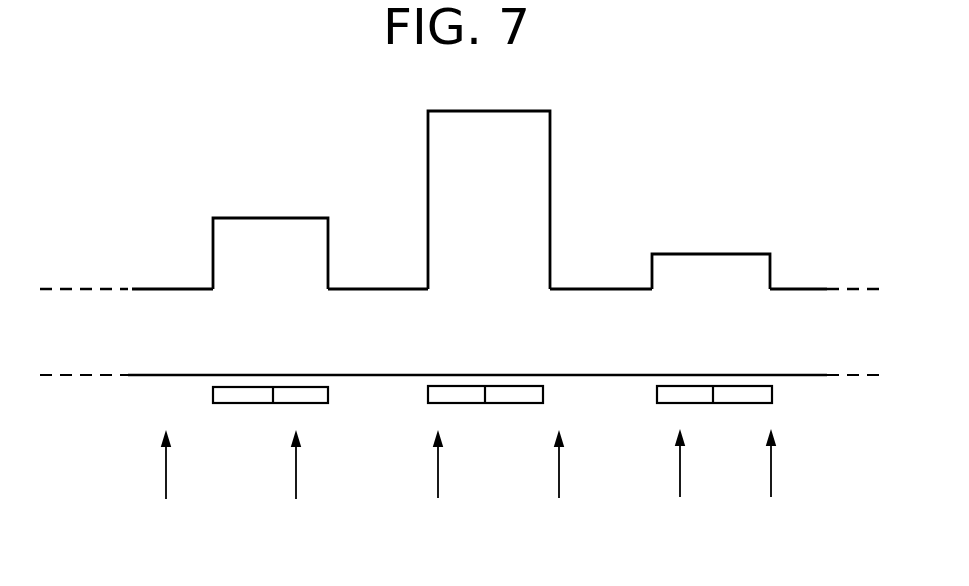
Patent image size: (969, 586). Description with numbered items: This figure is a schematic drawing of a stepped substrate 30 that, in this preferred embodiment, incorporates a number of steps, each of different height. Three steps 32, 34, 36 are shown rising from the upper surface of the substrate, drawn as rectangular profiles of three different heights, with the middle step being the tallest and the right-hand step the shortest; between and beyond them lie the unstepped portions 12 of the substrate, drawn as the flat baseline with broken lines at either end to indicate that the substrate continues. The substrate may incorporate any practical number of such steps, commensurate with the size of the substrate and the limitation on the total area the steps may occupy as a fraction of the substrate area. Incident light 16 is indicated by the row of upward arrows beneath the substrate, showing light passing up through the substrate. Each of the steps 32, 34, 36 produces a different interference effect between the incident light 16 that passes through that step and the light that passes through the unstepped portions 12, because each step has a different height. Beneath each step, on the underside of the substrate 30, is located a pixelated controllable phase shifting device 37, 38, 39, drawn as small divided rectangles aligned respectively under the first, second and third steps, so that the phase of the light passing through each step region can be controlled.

The unstepped portions 12 is at (166, 288).
The incident light 16 is at (488, 460).
The stepped substrate 30 is at (808, 353).
The first step 32 is at (213, 240).
The second step 34 is at (428, 167).
The third step 36 is at (652, 268).
The pixelated controllable phase shifting device 37 is at (213, 391).
The pixelated controllable phase shifting device 38 is at (428, 391).
The pixelated controllable phase shifting device 39 is at (657, 391).